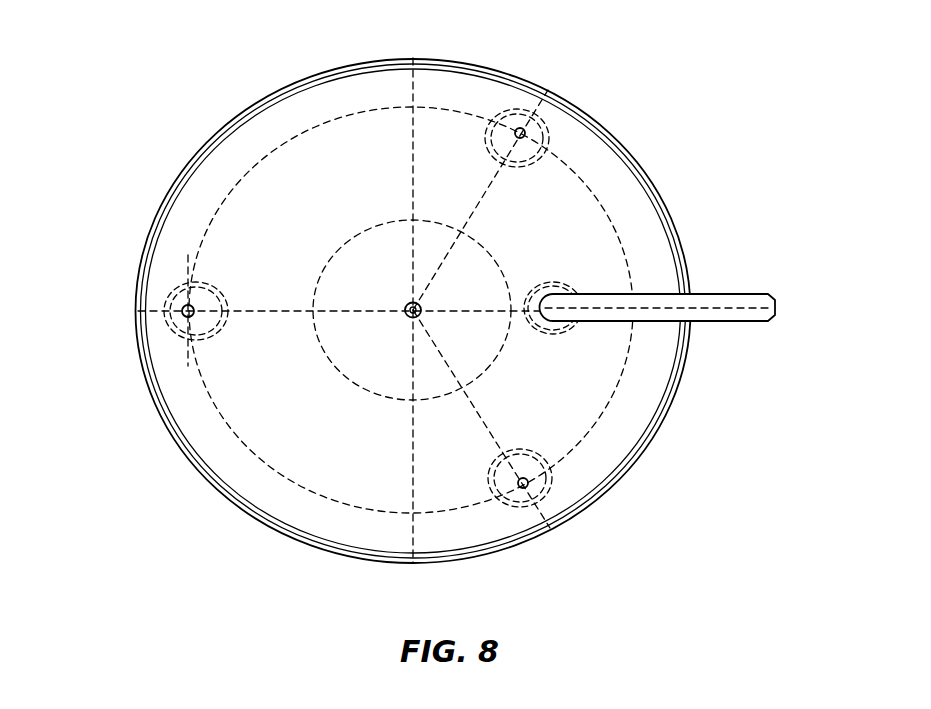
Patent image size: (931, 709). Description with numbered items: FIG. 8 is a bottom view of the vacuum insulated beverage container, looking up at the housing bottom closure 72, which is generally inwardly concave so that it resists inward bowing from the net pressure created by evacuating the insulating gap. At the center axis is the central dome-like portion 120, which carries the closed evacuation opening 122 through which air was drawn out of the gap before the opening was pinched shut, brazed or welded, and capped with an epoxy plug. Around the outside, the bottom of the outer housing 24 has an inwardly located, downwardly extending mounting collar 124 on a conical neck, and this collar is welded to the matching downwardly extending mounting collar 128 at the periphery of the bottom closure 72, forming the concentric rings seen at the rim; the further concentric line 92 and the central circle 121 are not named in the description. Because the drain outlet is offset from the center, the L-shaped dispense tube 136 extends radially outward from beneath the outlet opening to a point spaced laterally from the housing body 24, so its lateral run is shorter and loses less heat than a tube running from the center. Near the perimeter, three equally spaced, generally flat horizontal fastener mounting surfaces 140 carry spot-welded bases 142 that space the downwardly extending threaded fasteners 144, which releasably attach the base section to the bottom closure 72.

The outer housing 24 is at (400, 59).
The mounting collar 124 is at (262, 102).
The mounting collar 128 is at (297, 96).
The housing bottom closure 72 is at (235, 210).
The ring 92 is at (615, 265).
The central circle 121 is at (487, 287).
The central dome-like portion 120 is at (410, 318).
The closed evacuation opening 122 is at (411, 318).
The threaded fasteners 144 is at (182, 311).
The bases 142 is at (583, 108).
The fastener mounting surfaces 140 is at (518, 183).
The L-shaped dispense tube 136 is at (763, 293).